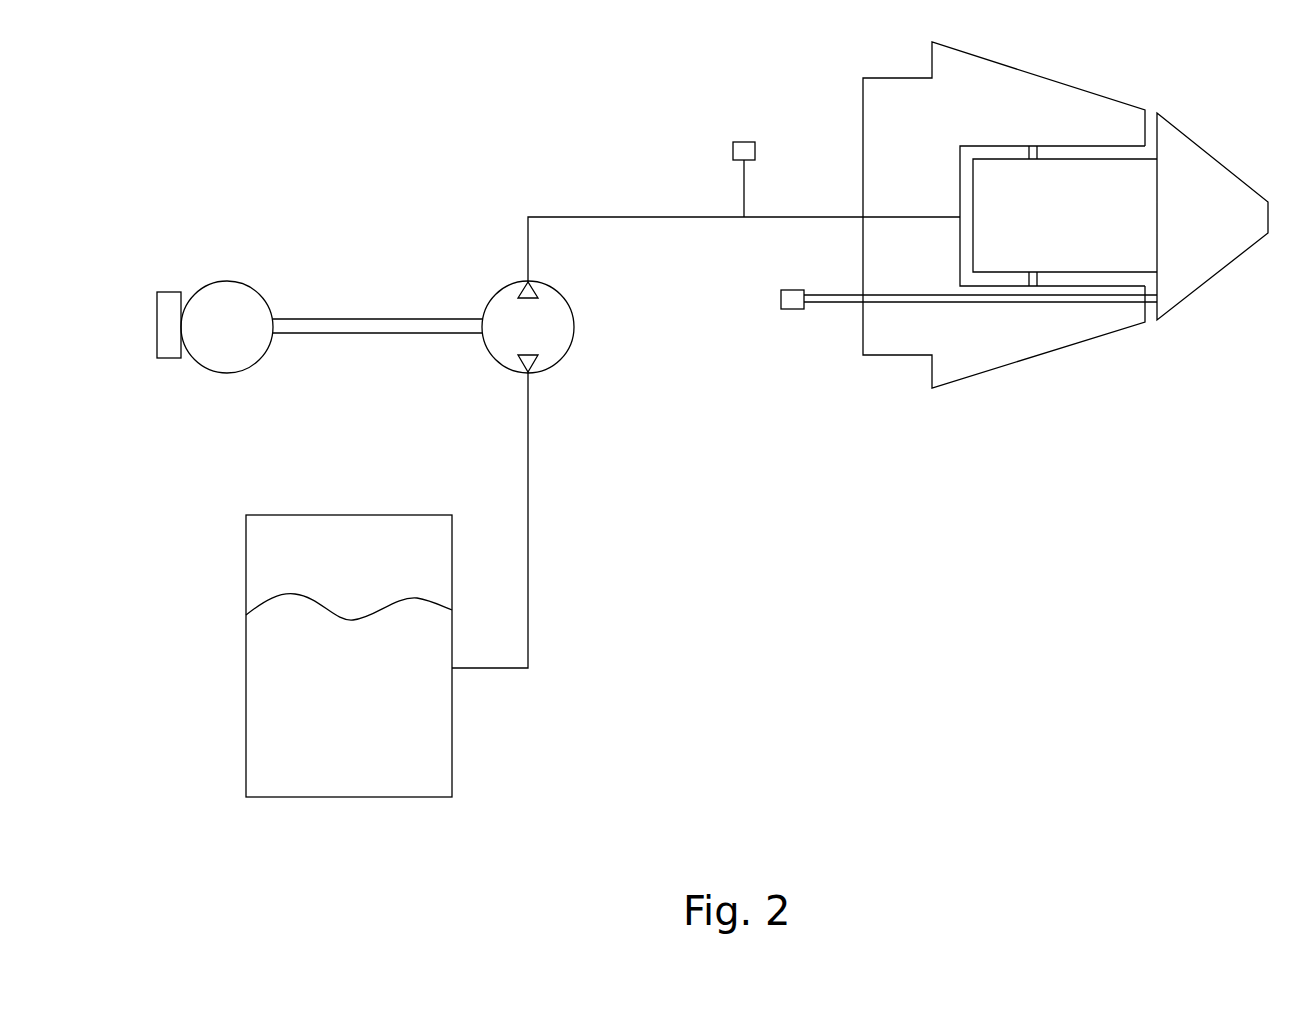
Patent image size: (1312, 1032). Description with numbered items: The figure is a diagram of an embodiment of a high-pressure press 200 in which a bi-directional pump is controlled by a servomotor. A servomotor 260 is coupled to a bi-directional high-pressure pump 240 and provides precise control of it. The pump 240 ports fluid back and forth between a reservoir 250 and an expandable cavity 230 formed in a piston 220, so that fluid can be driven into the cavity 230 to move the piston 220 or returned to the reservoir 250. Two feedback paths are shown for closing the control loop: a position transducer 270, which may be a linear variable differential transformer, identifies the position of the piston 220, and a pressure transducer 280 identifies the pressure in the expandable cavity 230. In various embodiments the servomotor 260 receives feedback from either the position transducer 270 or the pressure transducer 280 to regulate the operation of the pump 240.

The high-pressure press 200 is at (685, 404).
The piston 220 is at (1053, 203).
The expandable cavity 230 is at (979, 152).
The bi-directional high-pressure pump 240 is at (550, 323).
The reservoir 250 is at (280, 713).
The servomotor 260 is at (215, 313).
The position transducer 270 is at (795, 302).
The pressure transducer 280 is at (747, 148).